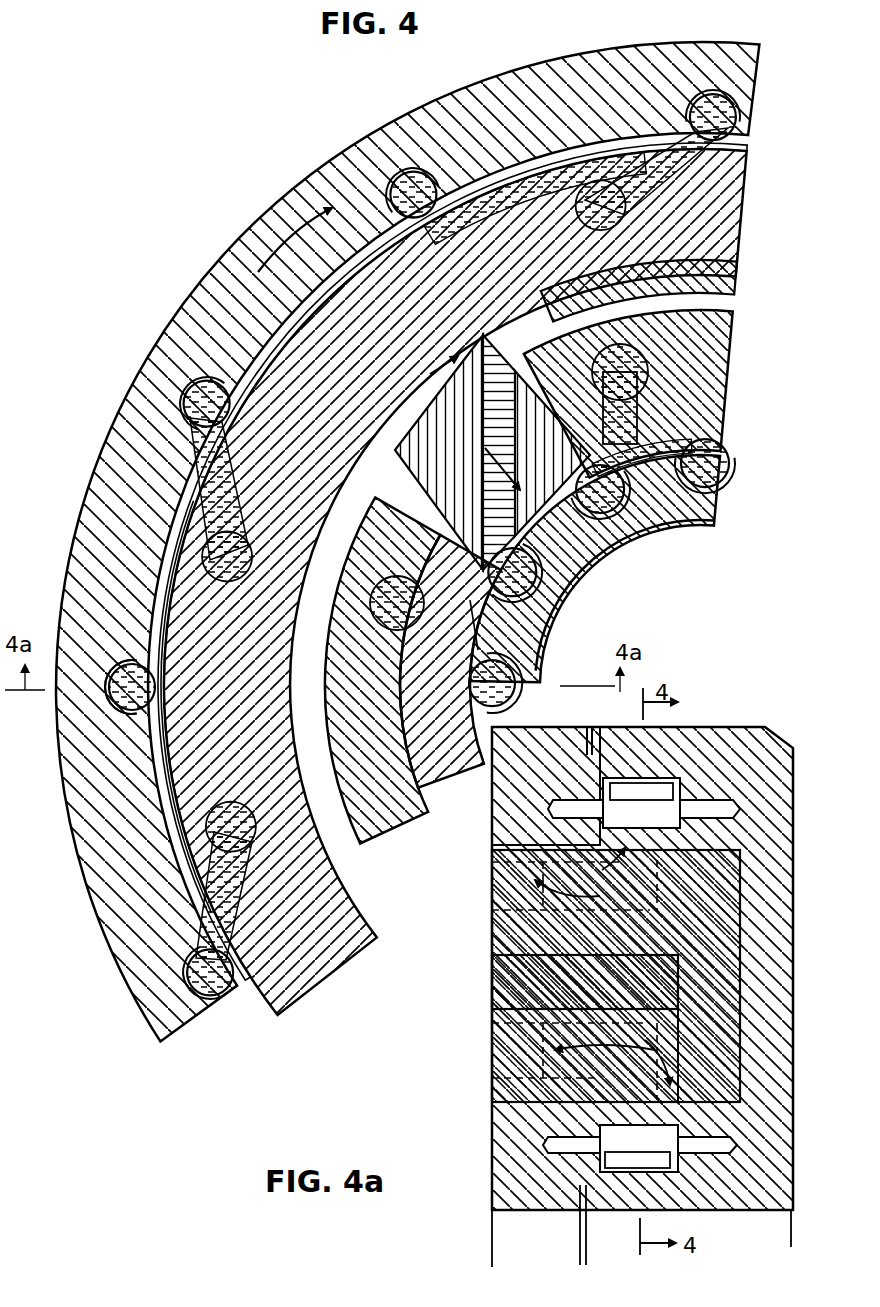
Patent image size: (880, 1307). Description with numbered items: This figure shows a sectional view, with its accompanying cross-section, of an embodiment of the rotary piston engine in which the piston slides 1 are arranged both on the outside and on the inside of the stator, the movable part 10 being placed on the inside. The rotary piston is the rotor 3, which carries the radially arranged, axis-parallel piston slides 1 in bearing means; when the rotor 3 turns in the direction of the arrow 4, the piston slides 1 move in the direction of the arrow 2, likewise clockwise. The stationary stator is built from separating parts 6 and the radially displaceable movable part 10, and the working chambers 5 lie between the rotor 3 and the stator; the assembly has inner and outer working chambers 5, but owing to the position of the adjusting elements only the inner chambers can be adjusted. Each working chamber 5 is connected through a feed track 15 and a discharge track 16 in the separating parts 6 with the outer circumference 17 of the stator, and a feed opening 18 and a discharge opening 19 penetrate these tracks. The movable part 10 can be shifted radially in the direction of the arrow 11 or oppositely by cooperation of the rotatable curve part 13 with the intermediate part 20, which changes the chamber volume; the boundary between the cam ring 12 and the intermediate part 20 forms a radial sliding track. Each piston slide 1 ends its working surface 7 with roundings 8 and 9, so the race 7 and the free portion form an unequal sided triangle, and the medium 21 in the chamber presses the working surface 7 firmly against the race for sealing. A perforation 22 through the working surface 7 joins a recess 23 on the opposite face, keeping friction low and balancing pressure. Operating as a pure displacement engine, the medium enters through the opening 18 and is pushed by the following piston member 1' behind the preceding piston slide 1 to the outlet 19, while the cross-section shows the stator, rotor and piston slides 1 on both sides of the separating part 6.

In FIG. 4, the piston slide 1 is at (157, 552).
In FIG. 4a, the piston slide 1 is at (589, 930).
In FIG. 4, the following piston member 1' is at (110, 707).
In FIG. 4, the direction arrow of the piston slides 2 is at (210, 985).
In FIG. 4, the rotor 3 is at (405, 420).
In FIG. 4a, the rotor 3 is at (782, 742).
In FIG. 4, the direction arrow of the rotor 4 is at (290, 253).
In FIG. 4, the working chamber 5 is at (300, 292).
In FIG. 4, the separating part 6 is at (245, 472).
In FIG. 4a, the separating part 6 is at (520, 934).
In FIG. 4, the working surface 7 is at (140, 698).
In FIG. 4, the rounding 8 is at (395, 207).
In FIG. 4, the rounding 9 is at (412, 148).
In FIG. 4, the movable part 10 is at (660, 547).
In FIG. 4, the displacement arrow 11 is at (672, 533).
In FIG. 4, the cam ring 12 is at (725, 275).
In FIG. 4a, the cam ring 12 is at (522, 990).
In FIG. 4, the rotatable curve part 13 is at (445, 378).
In FIG. 4, the feed track 15 is at (497, 632).
In FIG. 4, the discharge track 16 is at (745, 515).
In FIG. 4, the outer circumference of the stator 17 is at (176, 692).
In FIG. 4, the feed opening 18 is at (212, 530).
In FIG. 4a, the feed opening 18 is at (535, 866).
In FIG. 4, the discharge opening 19 is at (525, 93).
In FIG. 4a, the discharge opening 19 is at (505, 1040).
In FIG. 4, the intermediate part 20 is at (470, 442).
In FIG. 4a, the intermediate part 20 is at (680, 1006).
In FIG. 4, the medium 21 is at (282, 245).
In FIG. 4, the perforation 22 is at (390, 165).
In FIG. 4, the recess 23 is at (215, 985).